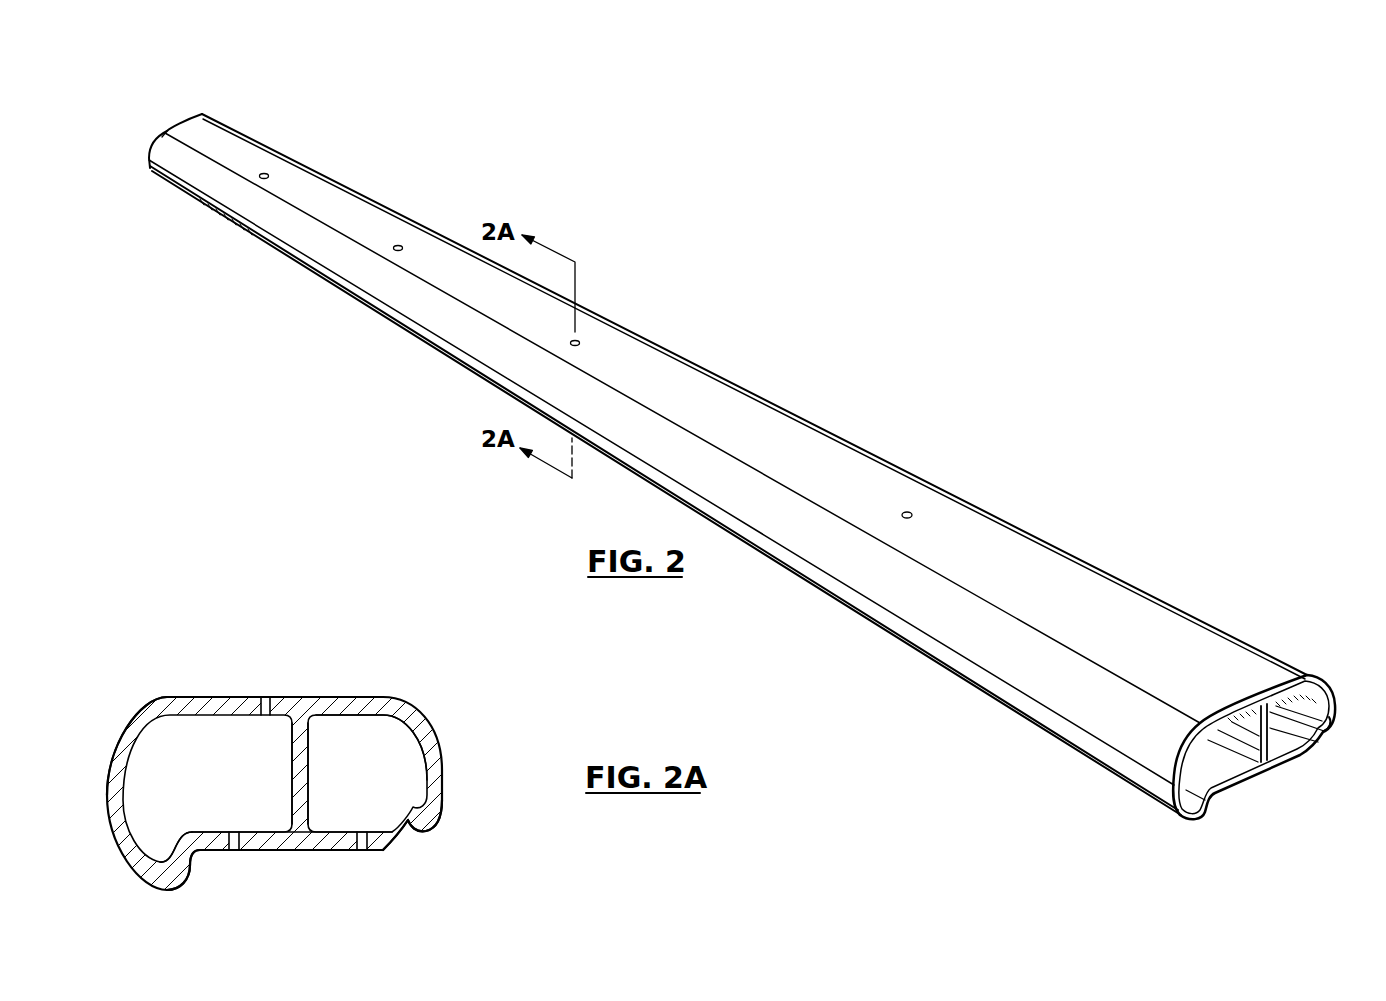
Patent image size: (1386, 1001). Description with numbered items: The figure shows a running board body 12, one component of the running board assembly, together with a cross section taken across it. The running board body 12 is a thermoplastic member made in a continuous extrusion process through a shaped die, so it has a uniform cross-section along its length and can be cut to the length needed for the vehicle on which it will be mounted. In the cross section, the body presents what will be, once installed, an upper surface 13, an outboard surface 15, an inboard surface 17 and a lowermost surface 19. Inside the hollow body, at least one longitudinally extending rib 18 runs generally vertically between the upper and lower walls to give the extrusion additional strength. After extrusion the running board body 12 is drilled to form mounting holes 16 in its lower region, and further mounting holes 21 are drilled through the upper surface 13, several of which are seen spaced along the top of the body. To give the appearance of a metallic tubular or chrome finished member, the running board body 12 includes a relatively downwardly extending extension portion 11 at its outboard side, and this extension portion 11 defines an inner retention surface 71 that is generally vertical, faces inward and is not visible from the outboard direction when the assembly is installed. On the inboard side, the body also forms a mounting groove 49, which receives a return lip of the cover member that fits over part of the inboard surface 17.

In FIG. 2A, the downwardly extending extension portion 11 is at (170, 860).
In FIG. 2, the running board body 12 is at (1080, 558).
In FIG. 2A, the running board body 12 is at (430, 733).
In FIG. 2A, the upper surface 13 is at (340, 697).
In FIG. 2A, the outboard surface 15 is at (112, 740).
In FIG. 2A, the mounting holes 16 is at (234, 851).
In FIG. 2A, the inboard surface 17 is at (444, 793).
In FIG. 2A, the longitudinally extending rib 18 is at (313, 800).
In FIG. 2A, the lowermost surface 19 is at (318, 851).
In FIG. 2, the mounting holes in the upper surface 21 is at (267, 173).
In FIG. 2A, the mounting holes in the upper surface 21 is at (267, 697).
In FIG. 2, the mounting groove 49 is at (1326, 733).
In FIG. 2A, the inner retention surface 71 is at (191, 873).